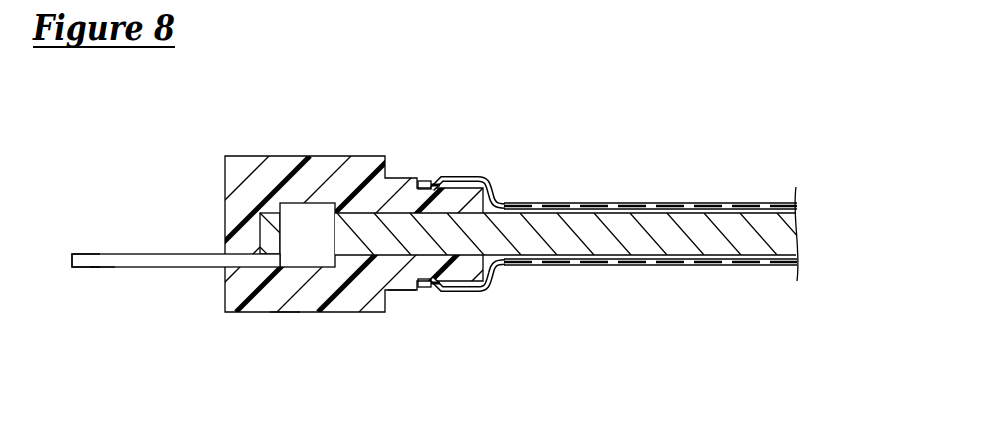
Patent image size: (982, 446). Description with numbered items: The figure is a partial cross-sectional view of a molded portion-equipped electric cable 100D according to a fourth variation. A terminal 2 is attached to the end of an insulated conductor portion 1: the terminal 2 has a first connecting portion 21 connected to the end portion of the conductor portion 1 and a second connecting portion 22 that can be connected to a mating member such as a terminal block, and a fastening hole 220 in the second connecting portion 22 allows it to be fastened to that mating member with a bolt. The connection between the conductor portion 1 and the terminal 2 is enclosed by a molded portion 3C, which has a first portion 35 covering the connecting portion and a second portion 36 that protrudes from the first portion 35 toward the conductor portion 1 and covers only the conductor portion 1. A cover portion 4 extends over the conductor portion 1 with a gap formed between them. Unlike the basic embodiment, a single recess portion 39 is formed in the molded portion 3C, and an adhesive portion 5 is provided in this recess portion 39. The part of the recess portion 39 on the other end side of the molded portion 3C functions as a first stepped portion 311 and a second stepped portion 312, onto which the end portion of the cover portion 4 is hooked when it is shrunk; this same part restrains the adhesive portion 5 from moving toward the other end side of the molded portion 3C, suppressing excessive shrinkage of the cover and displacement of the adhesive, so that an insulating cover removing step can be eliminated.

The molded portion-equipped electric cable 100D is at (782, 137).
The molded portion 3C is at (245, 155).
The first connecting portion 21 is at (305, 206).
The terminal 2 is at (155, 252).
The second connecting portion 22 is at (82, 253).
The fastening hole 220 is at (99, 266).
The conductor portion 1 is at (755, 243).
The first stepped portion 311 is at (450, 179).
The second stepped portion 312 is at (468, 275).
The cover portion 4 is at (660, 202).
The recess portion 39 is at (421, 186).
The adhesive portion 5 is at (440, 294).
The first portion 35 is at (285, 335).
The second portion 36 is at (402, 337).